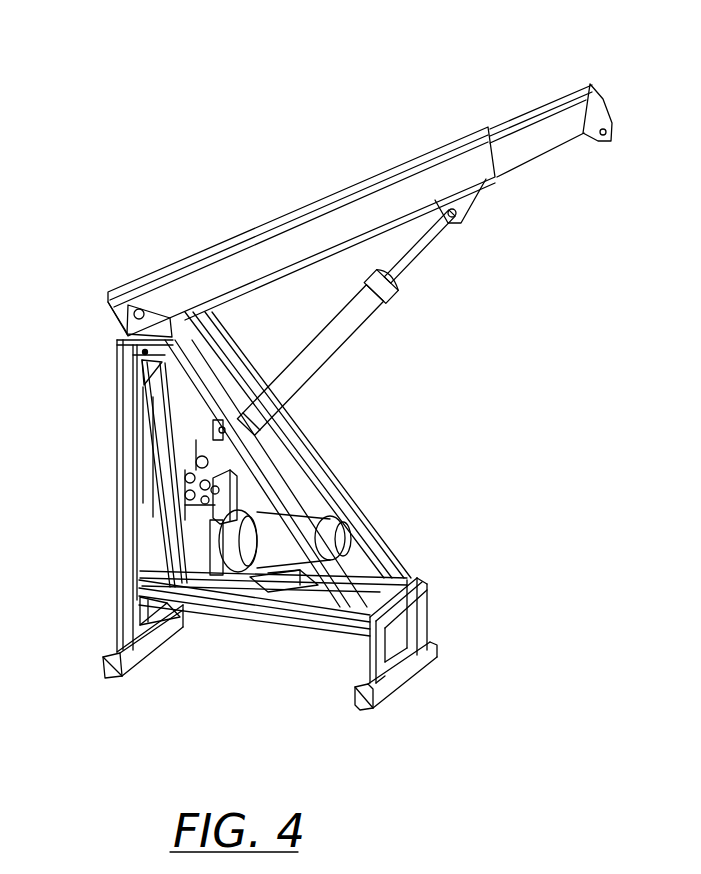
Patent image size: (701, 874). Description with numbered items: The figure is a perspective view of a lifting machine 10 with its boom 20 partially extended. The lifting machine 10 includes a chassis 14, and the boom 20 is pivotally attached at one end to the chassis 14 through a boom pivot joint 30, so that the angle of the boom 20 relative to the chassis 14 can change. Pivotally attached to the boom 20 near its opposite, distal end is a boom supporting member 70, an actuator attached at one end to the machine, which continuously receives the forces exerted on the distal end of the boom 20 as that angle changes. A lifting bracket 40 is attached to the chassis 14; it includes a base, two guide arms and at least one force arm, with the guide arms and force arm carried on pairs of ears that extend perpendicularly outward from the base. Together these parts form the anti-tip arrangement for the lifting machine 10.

The lifting machine 10 is at (150, 101).
The chassis 14 is at (115, 452).
The boom 20 is at (385, 164).
The boom pivot joint 30 is at (115, 358).
The lifting bracket 40 is at (213, 443).
The boom supporting member 70 is at (360, 332).